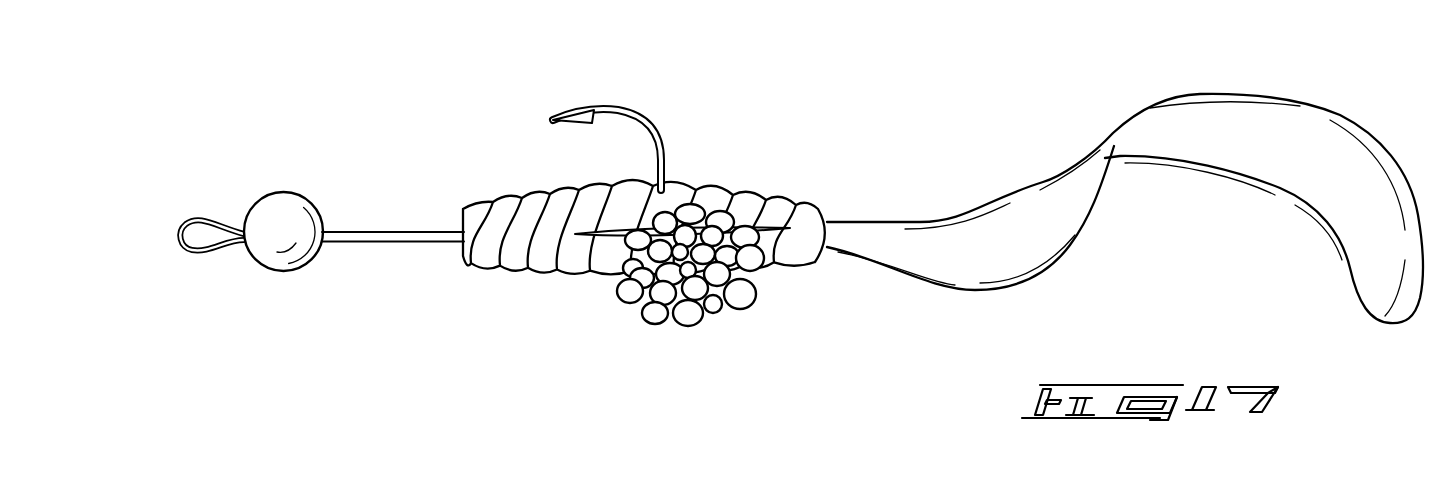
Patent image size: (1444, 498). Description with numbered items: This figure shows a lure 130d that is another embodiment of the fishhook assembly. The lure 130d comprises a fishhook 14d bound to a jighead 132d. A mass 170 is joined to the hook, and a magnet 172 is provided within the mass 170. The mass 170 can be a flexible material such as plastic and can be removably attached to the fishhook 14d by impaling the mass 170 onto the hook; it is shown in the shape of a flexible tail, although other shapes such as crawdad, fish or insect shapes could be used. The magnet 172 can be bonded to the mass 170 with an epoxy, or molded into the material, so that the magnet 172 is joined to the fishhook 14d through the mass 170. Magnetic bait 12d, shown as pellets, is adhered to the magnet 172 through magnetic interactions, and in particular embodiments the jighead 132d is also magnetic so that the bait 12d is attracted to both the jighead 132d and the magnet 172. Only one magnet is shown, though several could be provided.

The magnetic bait 12d is at (680, 330).
The fishhook 14d is at (438, 216).
The lure 130d is at (322, 266).
The jighead 132d is at (287, 272).
The mass 170 is at (802, 262).
The magnet 172 is at (693, 218).